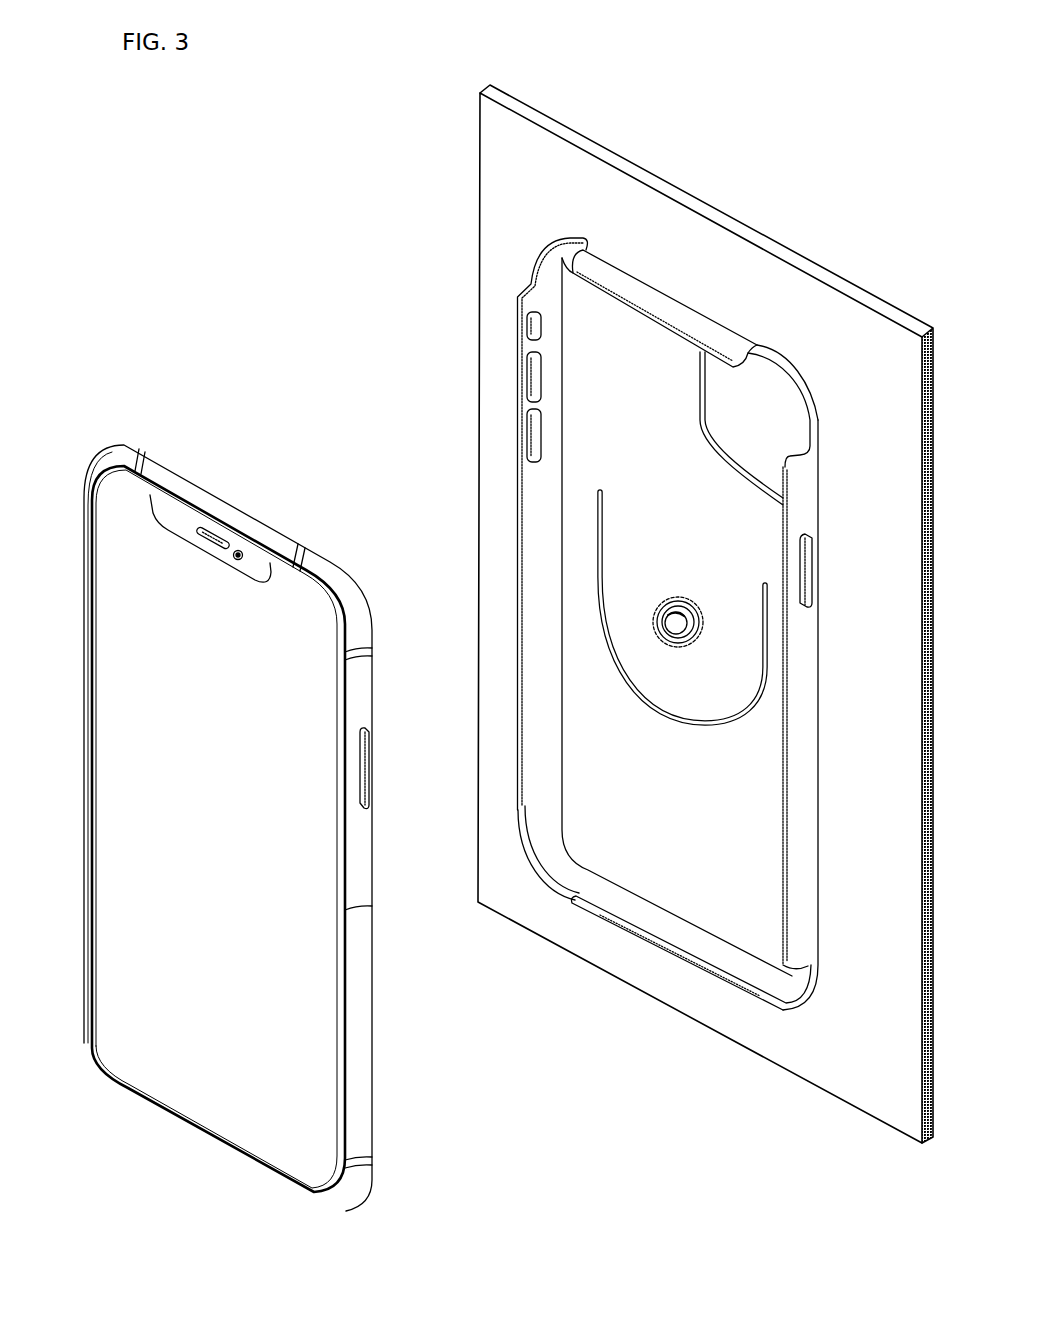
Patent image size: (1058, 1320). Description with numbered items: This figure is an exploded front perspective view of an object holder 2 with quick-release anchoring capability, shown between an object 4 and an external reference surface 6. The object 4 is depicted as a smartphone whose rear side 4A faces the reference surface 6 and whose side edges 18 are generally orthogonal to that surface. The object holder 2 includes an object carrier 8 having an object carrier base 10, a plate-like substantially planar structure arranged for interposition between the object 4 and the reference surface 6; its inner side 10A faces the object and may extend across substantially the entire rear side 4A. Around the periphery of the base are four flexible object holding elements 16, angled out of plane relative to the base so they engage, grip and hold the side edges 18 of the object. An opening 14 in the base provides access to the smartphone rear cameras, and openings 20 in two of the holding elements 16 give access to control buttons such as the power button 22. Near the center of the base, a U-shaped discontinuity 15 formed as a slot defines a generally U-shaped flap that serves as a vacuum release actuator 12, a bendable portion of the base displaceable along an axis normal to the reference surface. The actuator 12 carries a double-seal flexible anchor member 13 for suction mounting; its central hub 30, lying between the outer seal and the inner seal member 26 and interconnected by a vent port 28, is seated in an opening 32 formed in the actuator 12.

The object holder 2 is at (687, 291).
The object 4 is at (176, 426).
The rear side of the object 4A is at (376, 986).
The reference surface 6 is at (795, 232).
The object carrier 8 is at (513, 263).
The object carrier base 10 is at (582, 671).
The inner side of the object carrier base 10A is at (708, 889).
The vacuum release actuator 12 is at (624, 567).
The anchor member 13 is at (678, 627).
The opening 14 is at (712, 449).
The U-shaped discontinuity 15 is at (673, 707).
The object holding elements 16 is at (598, 273).
The side edges 18 is at (188, 495).
The openings 20 is at (505, 298).
The power button 22 is at (363, 771).
The inner seal member 26 is at (676, 601).
The vent port 28 is at (688, 613).
The central hub 30 is at (701, 628).
The opening 32 is at (691, 646).